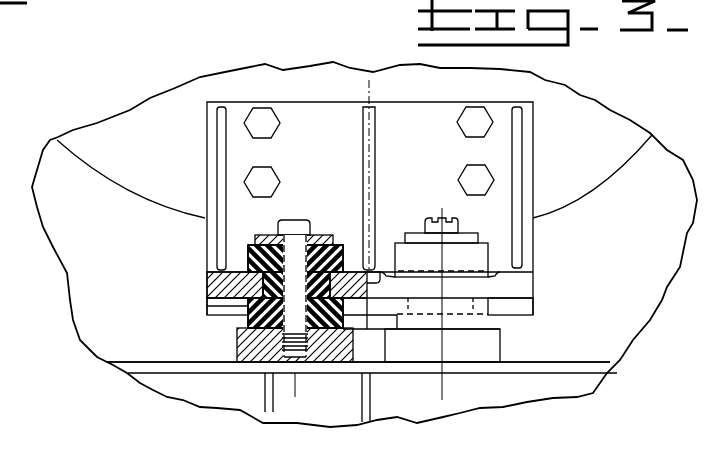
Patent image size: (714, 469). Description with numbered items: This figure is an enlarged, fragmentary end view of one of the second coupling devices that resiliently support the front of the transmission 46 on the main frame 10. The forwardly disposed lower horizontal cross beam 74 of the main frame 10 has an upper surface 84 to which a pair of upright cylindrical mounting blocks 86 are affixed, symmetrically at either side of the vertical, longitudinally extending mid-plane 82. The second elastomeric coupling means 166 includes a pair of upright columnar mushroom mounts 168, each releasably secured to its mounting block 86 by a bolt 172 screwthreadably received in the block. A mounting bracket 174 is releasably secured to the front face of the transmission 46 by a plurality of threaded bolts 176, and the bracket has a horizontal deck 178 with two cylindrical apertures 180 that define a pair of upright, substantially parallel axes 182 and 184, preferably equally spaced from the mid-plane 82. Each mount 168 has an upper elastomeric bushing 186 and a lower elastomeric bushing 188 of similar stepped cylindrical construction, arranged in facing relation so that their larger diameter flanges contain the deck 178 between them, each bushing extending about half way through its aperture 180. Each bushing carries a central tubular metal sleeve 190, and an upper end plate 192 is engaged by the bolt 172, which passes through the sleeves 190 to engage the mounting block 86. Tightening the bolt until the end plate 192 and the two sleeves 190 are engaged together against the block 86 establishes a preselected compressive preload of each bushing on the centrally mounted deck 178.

The main frame 10 is at (574, 355).
The transmission 46 is at (155, 141).
The lower horizontal cross beam 74 is at (195, 397).
The vertical longitudinally extending mid-plane 82 is at (373, 90).
The upper surface 84 is at (107, 362).
The mounting block 86 is at (240, 352).
The second elastomeric coupling means 166 is at (316, 80).
The second coupling device or upright columnar mushroom mount 168 is at (236, 242).
The bolt 172 is at (289, 222).
The mounting bracket 174 is at (532, 150).
The bolt 176 is at (268, 123).
The horizontal deck 178 is at (208, 279).
The cylindrical aperture 180 is at (207, 306).
The axis 182 is at (296, 386).
The axis 184 is at (443, 386).
The upper elastomeric bushing 186 is at (253, 262).
The lower elastomeric bushing 188 is at (247, 326).
The tubular metal sleeve 190 is at (338, 208).
The upper end plate 192 is at (265, 236).